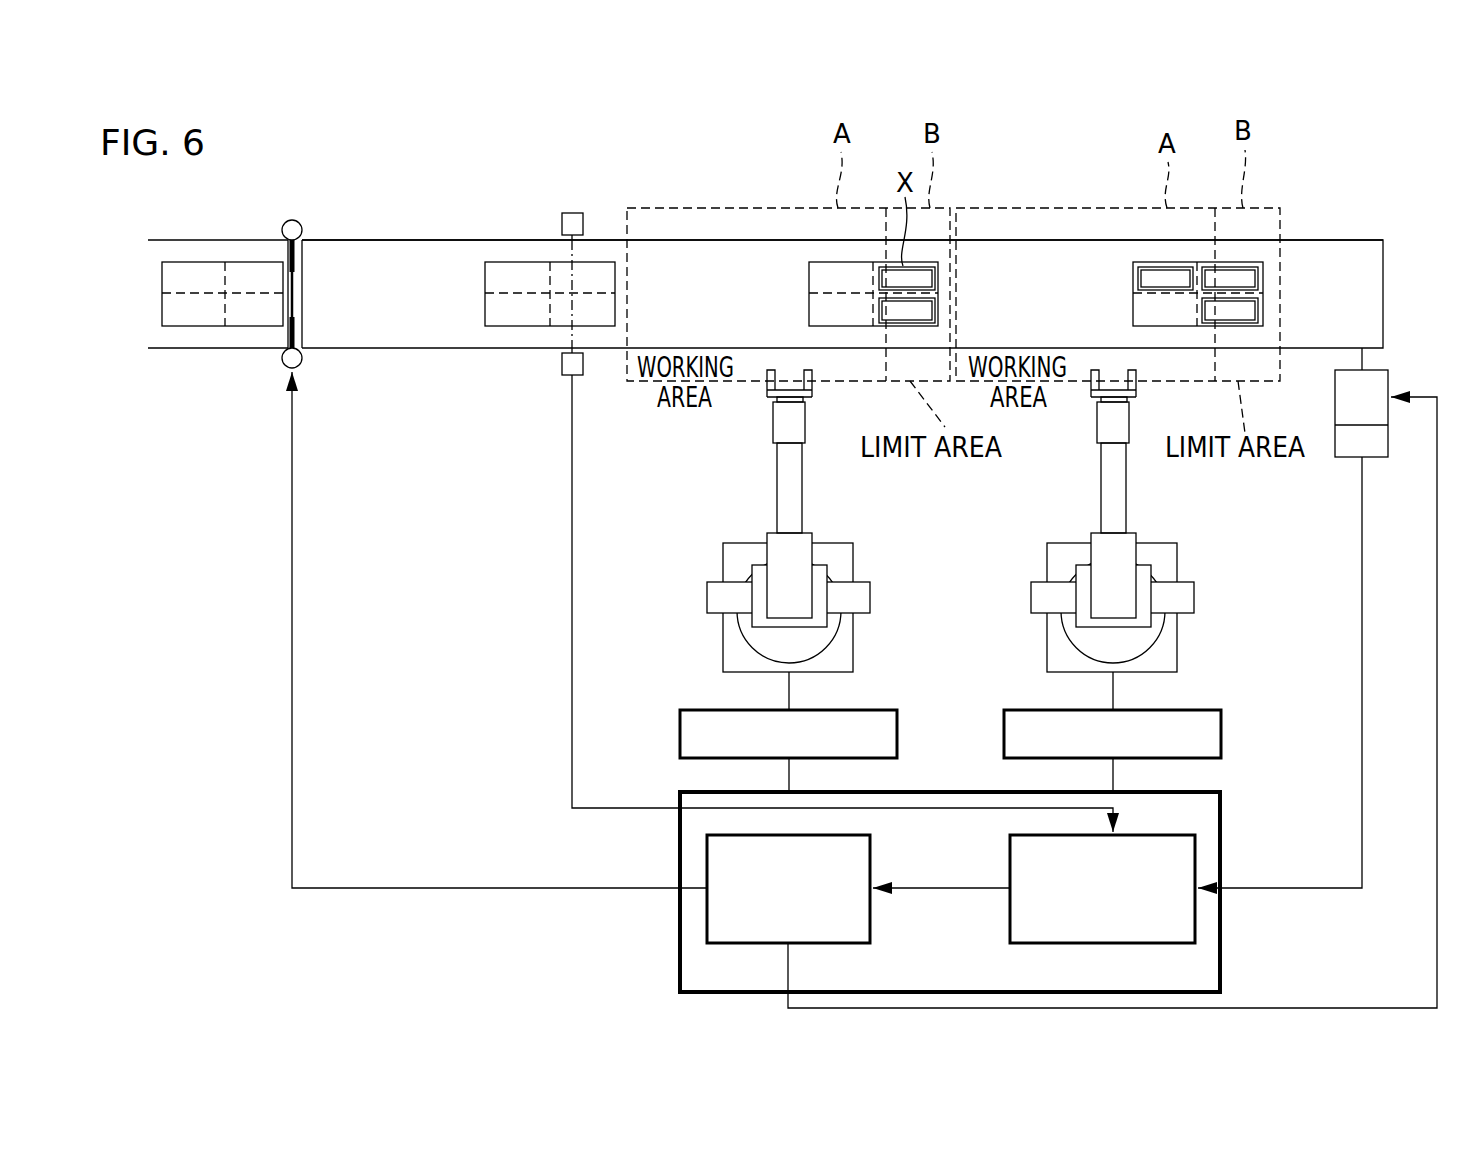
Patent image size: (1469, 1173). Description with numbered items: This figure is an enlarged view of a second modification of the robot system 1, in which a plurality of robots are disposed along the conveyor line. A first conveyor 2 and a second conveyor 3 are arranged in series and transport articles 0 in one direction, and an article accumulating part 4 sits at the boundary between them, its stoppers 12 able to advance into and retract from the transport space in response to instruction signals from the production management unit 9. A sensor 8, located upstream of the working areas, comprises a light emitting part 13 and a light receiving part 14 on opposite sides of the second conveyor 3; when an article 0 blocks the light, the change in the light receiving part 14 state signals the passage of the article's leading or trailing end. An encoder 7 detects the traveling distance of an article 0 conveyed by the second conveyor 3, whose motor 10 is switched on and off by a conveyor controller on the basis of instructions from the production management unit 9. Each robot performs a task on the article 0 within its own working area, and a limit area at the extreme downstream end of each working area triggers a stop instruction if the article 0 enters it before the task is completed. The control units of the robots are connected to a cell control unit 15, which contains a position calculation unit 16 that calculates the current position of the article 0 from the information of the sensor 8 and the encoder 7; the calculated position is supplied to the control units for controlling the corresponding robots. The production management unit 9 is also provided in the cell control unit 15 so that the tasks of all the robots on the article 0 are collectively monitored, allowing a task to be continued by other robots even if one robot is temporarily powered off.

The article 0 is at (252, 252).
The robot system 1 is at (1421, 221).
The first conveyor 2 is at (200, 352).
The second conveyor 3 is at (478, 237).
The article accumulating part 4 is at (302, 221).
The encoder 7 is at (1352, 457).
The sensor 8 is at (568, 210).
The production management unit 9 is at (707, 862).
The motor 10 is at (1388, 387).
The stoppers 12 is at (296, 255).
The light emitting part 13 is at (583, 222).
The light receiving part 14 is at (562, 362).
The cell control unit 15 is at (946, 791).
The position calculation unit 16 is at (1195, 857).